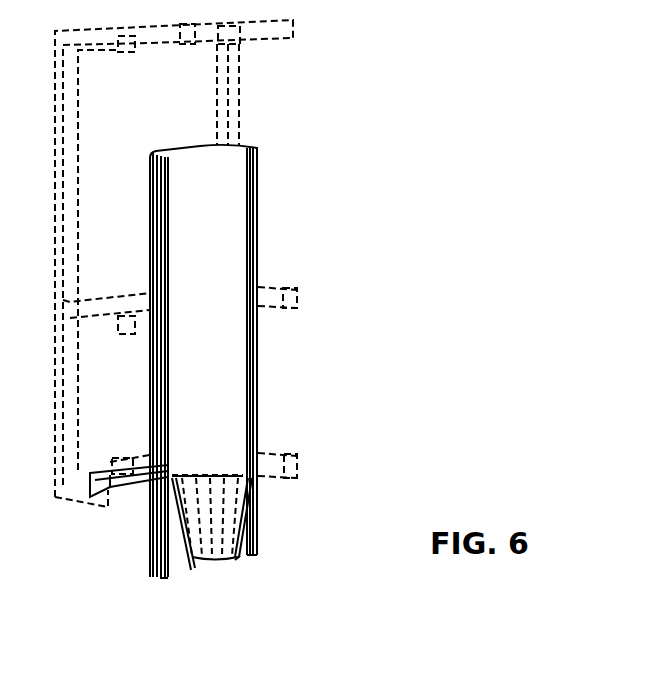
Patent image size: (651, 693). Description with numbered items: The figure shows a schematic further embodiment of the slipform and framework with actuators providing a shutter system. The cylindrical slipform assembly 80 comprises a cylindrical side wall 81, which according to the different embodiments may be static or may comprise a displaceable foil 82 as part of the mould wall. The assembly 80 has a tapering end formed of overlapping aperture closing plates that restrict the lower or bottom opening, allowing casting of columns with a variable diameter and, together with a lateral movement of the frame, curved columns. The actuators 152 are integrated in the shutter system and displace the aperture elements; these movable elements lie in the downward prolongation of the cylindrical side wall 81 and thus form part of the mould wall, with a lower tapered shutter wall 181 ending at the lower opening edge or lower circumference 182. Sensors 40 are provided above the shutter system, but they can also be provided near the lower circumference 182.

The slipform assembly 80 is at (282, 404).
The cylindrical side wall 81 is at (257, 190).
The displaceable foil 82 is at (247, 407).
The actuators of the shutter system 152 is at (207, 512).
The lower tapered shutter wall 181 is at (240, 557).
The lower circumference 182 is at (210, 558).
The sensors 40 is at (110, 500).